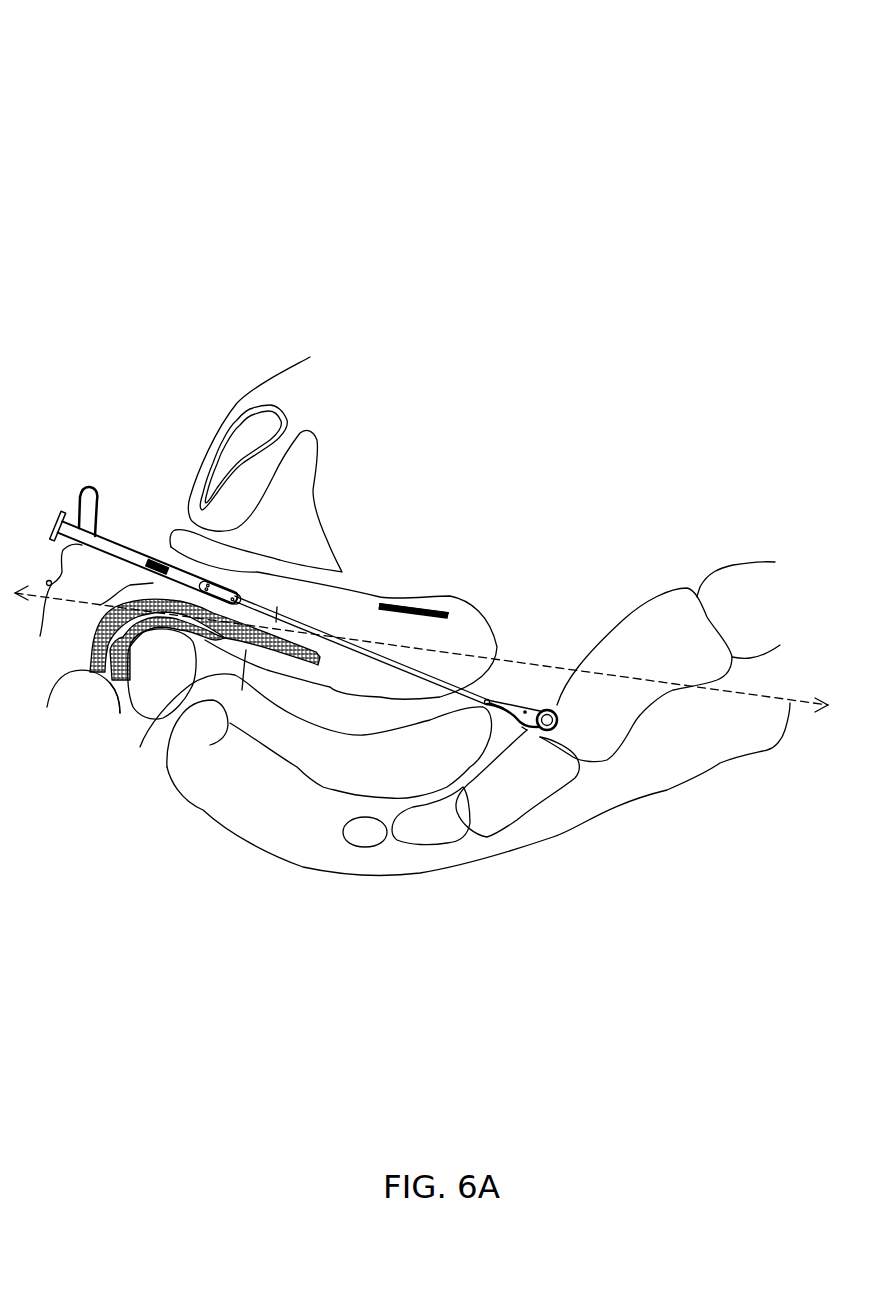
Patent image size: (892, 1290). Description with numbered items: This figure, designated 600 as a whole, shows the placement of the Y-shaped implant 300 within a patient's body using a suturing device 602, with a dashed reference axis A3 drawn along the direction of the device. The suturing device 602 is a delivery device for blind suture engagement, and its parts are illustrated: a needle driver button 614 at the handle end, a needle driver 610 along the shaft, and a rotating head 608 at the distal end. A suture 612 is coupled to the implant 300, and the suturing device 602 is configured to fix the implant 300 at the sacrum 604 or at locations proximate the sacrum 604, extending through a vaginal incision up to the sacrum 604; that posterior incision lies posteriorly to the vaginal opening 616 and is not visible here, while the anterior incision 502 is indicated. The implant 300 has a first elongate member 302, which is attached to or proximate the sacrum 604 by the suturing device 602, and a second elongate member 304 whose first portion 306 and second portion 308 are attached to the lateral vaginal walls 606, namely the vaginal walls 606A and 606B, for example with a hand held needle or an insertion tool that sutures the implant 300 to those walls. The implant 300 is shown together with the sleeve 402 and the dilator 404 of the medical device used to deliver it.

The system for treating the airway 600 is at (88, 91).
The implant 300 is at (140, 747).
The first elongate member 302 is at (210, 745).
The second elongate member 304 is at (170, 600).
The first portion 306 is at (66, 675).
The second portion 308 is at (118, 693).
The sleeve 402 is at (277, 607).
The dilator 404 is at (380, 662).
The anterior incision 502 is at (380, 605).
The suturing device 602 is at (43, 632).
The sacrum 604 is at (653, 617).
The lateral vaginal walls 606 is at (422, 596).
The vaginal wall 606A is at (397, 607).
The vaginal wall 606B is at (303, 662).
The rotating head 608 is at (557, 710).
The needle driver 610 is at (538, 720).
The suture 612 is at (522, 727).
The needle driver button 614 is at (70, 488).
The vaginal opening 616 is at (52, 598).
The axis A3 is at (767, 750).